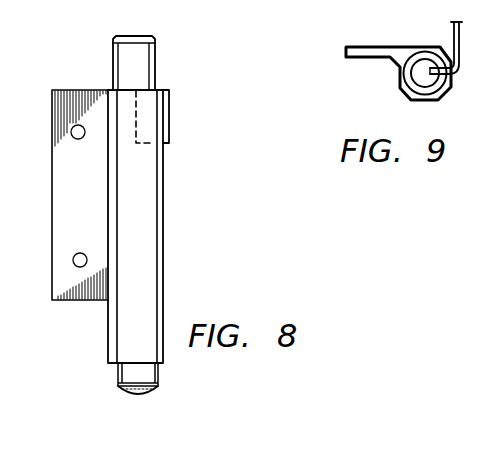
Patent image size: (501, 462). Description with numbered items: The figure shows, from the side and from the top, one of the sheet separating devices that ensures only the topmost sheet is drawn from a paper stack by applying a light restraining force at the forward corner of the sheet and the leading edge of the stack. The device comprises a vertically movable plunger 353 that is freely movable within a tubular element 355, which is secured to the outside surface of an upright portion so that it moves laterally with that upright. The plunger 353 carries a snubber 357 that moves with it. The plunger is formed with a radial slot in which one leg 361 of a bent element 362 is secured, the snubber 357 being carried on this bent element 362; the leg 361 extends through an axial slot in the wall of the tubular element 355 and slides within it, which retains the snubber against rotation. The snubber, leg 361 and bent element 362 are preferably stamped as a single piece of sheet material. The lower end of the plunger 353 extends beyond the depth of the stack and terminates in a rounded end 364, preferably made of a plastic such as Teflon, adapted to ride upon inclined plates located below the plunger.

In FIG. 8, the plunger 353 is at (157, 61).
In FIG. 9, the plunger 353 is at (417, 56).
In FIG. 8, the tubular element 355 is at (163, 217).
In FIG. 8, the rounded end 364 is at (138, 395).
In FIG. 9, the snubber 357 is at (450, 35).
In FIG. 9, the bent element 362 is at (461, 48).
In FIG. 9, the leg 361 is at (448, 72).